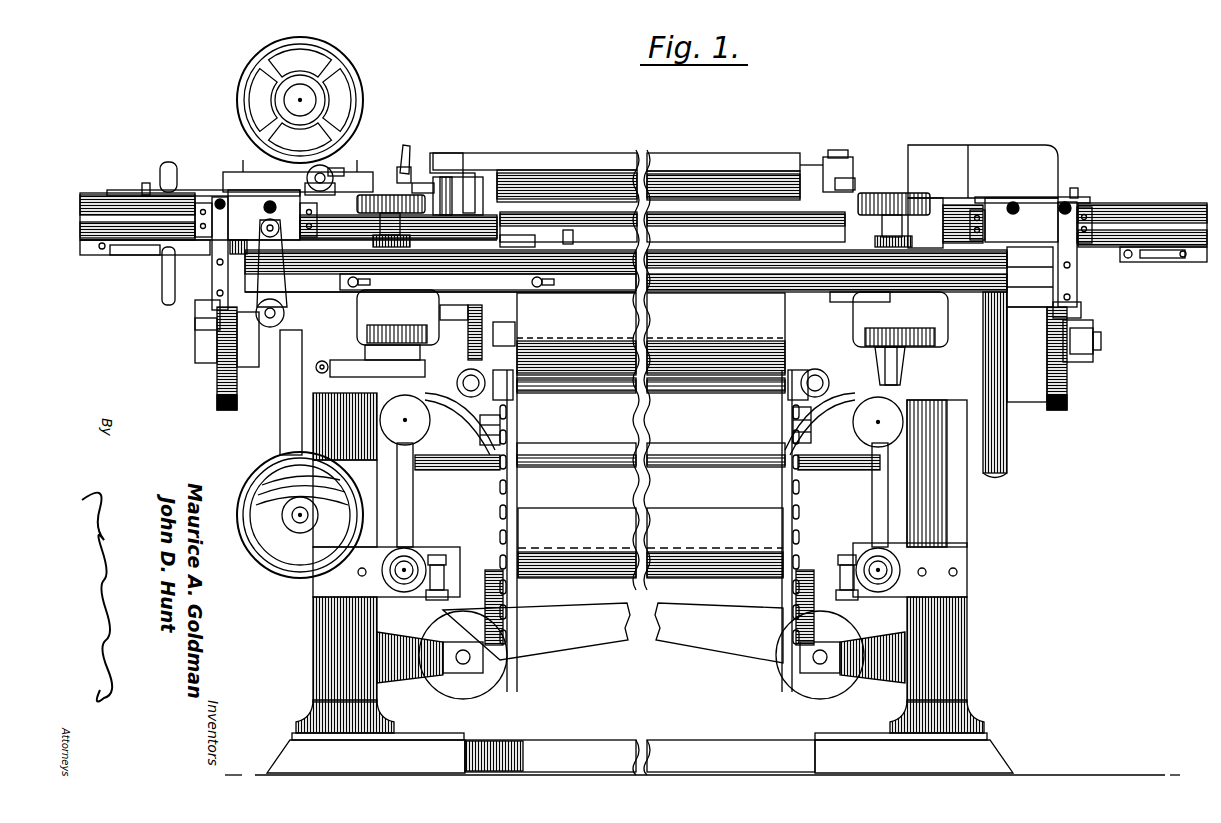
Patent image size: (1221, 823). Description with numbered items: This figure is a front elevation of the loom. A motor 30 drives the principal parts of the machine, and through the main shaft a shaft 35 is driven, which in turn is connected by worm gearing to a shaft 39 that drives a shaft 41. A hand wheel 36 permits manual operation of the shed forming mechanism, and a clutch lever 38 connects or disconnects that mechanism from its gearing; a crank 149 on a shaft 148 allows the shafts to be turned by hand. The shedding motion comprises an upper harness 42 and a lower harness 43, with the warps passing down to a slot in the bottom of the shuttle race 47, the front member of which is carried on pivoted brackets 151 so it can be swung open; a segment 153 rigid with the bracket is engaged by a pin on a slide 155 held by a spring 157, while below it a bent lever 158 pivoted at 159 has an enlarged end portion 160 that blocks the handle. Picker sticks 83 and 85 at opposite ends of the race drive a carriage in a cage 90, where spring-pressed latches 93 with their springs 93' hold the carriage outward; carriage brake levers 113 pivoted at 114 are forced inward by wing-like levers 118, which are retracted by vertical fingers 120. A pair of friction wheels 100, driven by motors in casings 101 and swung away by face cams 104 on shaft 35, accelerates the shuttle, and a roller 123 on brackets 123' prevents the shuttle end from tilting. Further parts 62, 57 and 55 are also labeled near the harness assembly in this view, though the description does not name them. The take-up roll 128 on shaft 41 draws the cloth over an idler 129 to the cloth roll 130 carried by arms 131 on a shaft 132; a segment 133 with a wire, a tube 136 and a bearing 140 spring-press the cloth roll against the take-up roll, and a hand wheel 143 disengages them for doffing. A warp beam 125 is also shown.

The motor 30 is at (352, 88).
The roller 123 is at (353, 149).
The brackets 123' is at (362, 154).
The friction wheels 100 is at (390, 195).
The clutch lever 38 is at (412, 170).
The bracket 62 is at (452, 186).
The shuttle race 47 is at (555, 185).
The upper harness 42 is at (715, 165).
The lower harness 43 is at (745, 188).
The bracket 57 is at (818, 172).
The nut 55 is at (842, 182).
The brackets 151 is at (515, 240).
The segment 153 is at (575, 236).
The idler 129 is at (805, 300).
The spring 157 is at (418, 280).
The slide 155 is at (560, 300).
The shaft 41 is at (505, 334).
The shaft 39 is at (503, 390).
The cloth roll 130 is at (682, 393).
The take-up roll 128 is at (750, 393).
The arms 131 is at (500, 430).
The shaft 132 is at (690, 468).
The beam 125 is at (670, 580).
The segment 133 is at (413, 500).
The tube 136 is at (404, 592).
The bearing 140 is at (446, 590).
The hand wheel 143 is at (252, 546).
The bent lever 158 is at (357, 380).
The picker stick 85 is at (410, 379).
The pivot 159 is at (316, 372).
The casings 101 is at (366, 340).
The picker stick 83 is at (887, 374).
The enlarged end portion 160 is at (283, 320).
The shaft 148 is at (270, 328).
The face cams 104 is at (217, 392).
The crank 149 is at (205, 318).
The hand wheel 36 is at (165, 305).
The cage 90 is at (86, 222).
The springs 93' is at (145, 264).
The latches 93 is at (647, 272).
The pivot 114 is at (142, 183).
The carriage brake levers 113 is at (193, 190).
The wing-like levers 118 is at (236, 203).
The vertical fingers 120 is at (1080, 260).
The shaft 35 is at (1101, 340).